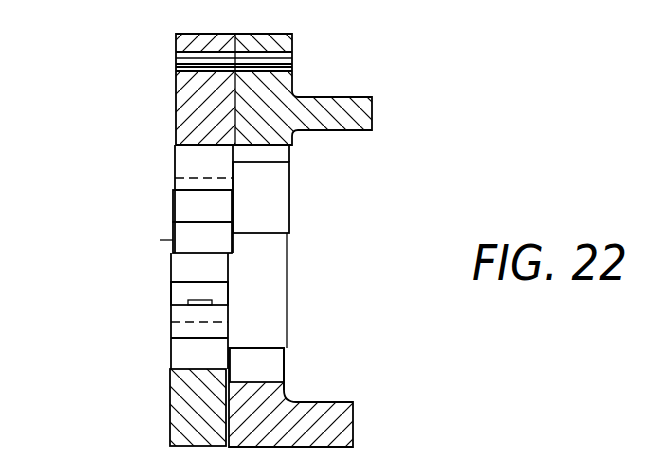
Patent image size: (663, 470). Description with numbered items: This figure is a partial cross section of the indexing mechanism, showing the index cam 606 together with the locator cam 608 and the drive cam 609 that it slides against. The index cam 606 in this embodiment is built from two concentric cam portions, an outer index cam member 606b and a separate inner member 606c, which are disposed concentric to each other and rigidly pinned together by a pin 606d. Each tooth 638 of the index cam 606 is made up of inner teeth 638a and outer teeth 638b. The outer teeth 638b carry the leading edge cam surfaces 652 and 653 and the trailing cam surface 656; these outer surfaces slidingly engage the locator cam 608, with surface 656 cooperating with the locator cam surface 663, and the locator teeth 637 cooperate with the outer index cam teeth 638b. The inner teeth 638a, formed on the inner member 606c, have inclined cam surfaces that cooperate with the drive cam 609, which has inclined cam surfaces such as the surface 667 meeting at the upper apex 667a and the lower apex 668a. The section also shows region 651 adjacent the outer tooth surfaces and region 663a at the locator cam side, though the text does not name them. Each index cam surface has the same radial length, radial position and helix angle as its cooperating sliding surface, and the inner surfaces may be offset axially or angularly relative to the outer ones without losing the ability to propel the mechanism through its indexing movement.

The index cam 606 is at (172, 77).
The pin 606d is at (177, 54).
The outer index cam member 606b is at (175, 123).
The inner index cam member 606c is at (291, 138).
The tooth of index cam 638 is at (175, 155).
The inner teeth 638a is at (289, 228).
The outer teeth 638b is at (173, 238).
The component 651 is at (216, 174).
The leading edge cam surface 652 is at (212, 220).
The leading edge cam surface 653 is at (212, 251).
The trailing cam surface 656 is at (283, 180).
The cam surface of locator cam 663 is at (199, 293).
The component 663 top portion 663a is at (180, 283).
The locator teeth 637 is at (170, 296).
The inclined cam surface of drive cam 667 is at (272, 377).
The upper apex 667a is at (265, 348).
The lower apex 668a is at (283, 372).
The locator cam 608 is at (166, 393).
The drive cam 609 is at (348, 401).